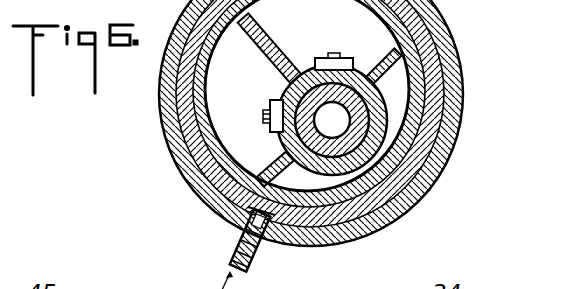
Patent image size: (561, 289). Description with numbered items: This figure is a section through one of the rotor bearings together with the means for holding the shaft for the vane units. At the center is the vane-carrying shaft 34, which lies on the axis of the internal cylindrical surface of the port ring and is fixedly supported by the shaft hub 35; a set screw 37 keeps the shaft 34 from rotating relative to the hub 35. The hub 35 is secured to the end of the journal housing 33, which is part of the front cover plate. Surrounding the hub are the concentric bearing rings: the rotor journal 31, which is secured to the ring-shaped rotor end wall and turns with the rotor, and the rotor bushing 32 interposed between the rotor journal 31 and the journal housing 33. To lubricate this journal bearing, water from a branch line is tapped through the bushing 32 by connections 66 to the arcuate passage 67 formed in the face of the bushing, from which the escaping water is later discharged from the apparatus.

The rotor journal 31 is at (413, 118).
The rotor bushing 32 is at (422, 30).
The journal housing 33 is at (420, 185).
The vane-carrying shaft 34 is at (283, 100).
The shaft hub 35 is at (303, 62).
The set screw 37 is at (333, 53).
The connections 66 is at (252, 250).
The arcuate passage 67 is at (232, 207).